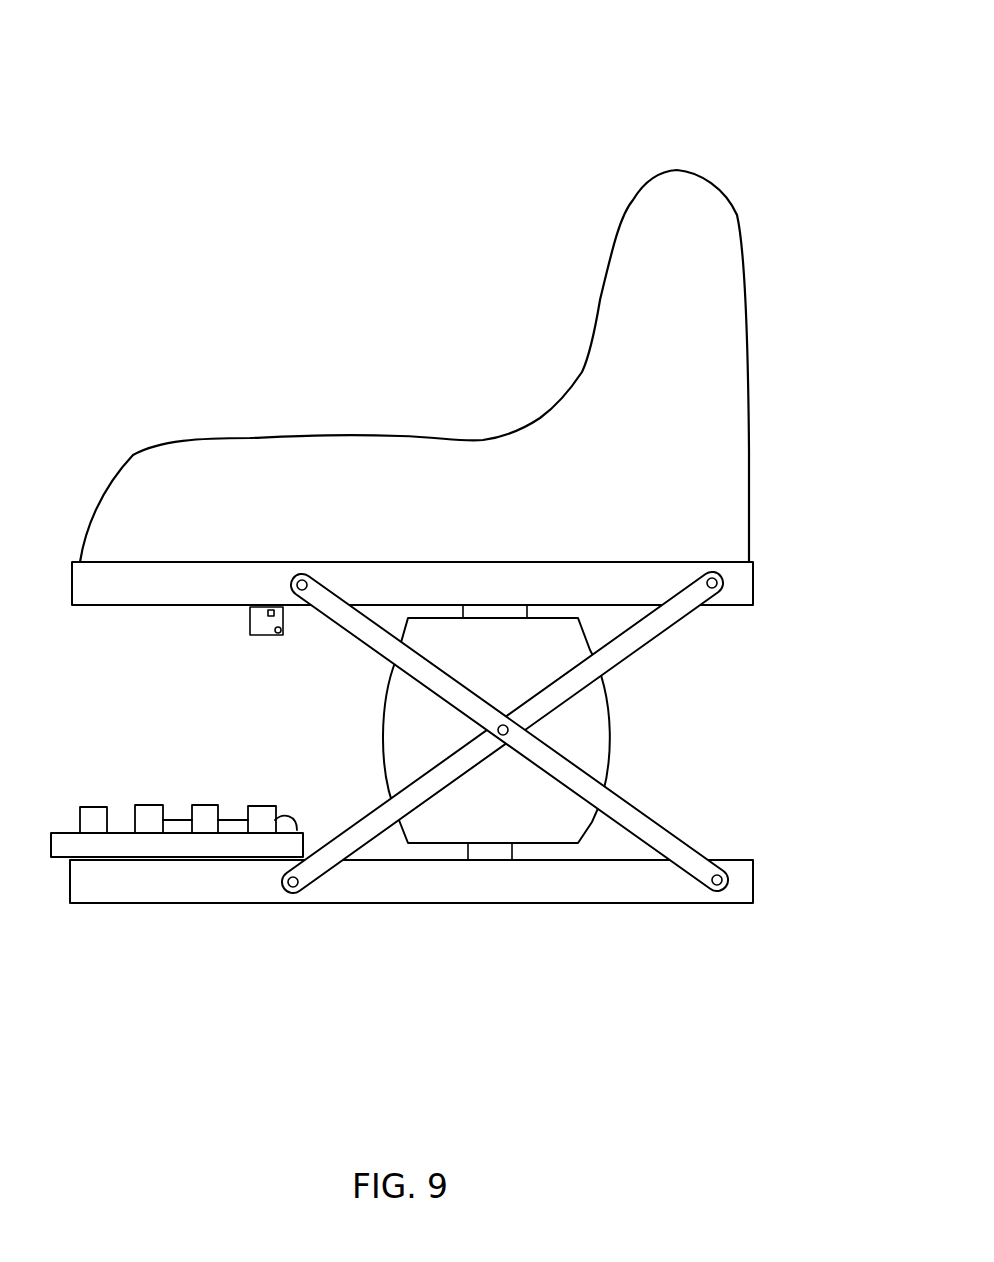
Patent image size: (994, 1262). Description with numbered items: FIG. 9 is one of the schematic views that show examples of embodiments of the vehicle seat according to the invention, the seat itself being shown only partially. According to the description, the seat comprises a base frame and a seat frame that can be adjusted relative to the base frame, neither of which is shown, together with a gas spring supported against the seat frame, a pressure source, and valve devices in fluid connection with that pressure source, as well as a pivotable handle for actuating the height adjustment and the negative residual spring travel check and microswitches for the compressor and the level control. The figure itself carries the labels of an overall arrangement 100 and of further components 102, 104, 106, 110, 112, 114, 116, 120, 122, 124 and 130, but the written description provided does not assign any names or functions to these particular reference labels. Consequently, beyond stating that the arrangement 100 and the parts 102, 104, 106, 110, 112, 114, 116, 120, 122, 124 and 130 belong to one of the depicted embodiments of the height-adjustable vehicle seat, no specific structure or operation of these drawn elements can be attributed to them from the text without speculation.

The lift seat assembly 100 is at (760, 107).
The base 102 is at (688, 903).
The seat support plate 104 is at (753, 590).
The scissor lift mechanism 106 is at (650, 700).
The seat 110 is at (250, 605).
The power cord 112 is at (297, 830).
The control module 114 is at (270, 613).
The control panel 116 is at (210, 815).
The actuator 120 is at (600, 843).
The wire 122 is at (148, 828).
The indicator 124 is at (280, 634).
The button 130 is at (86, 810).